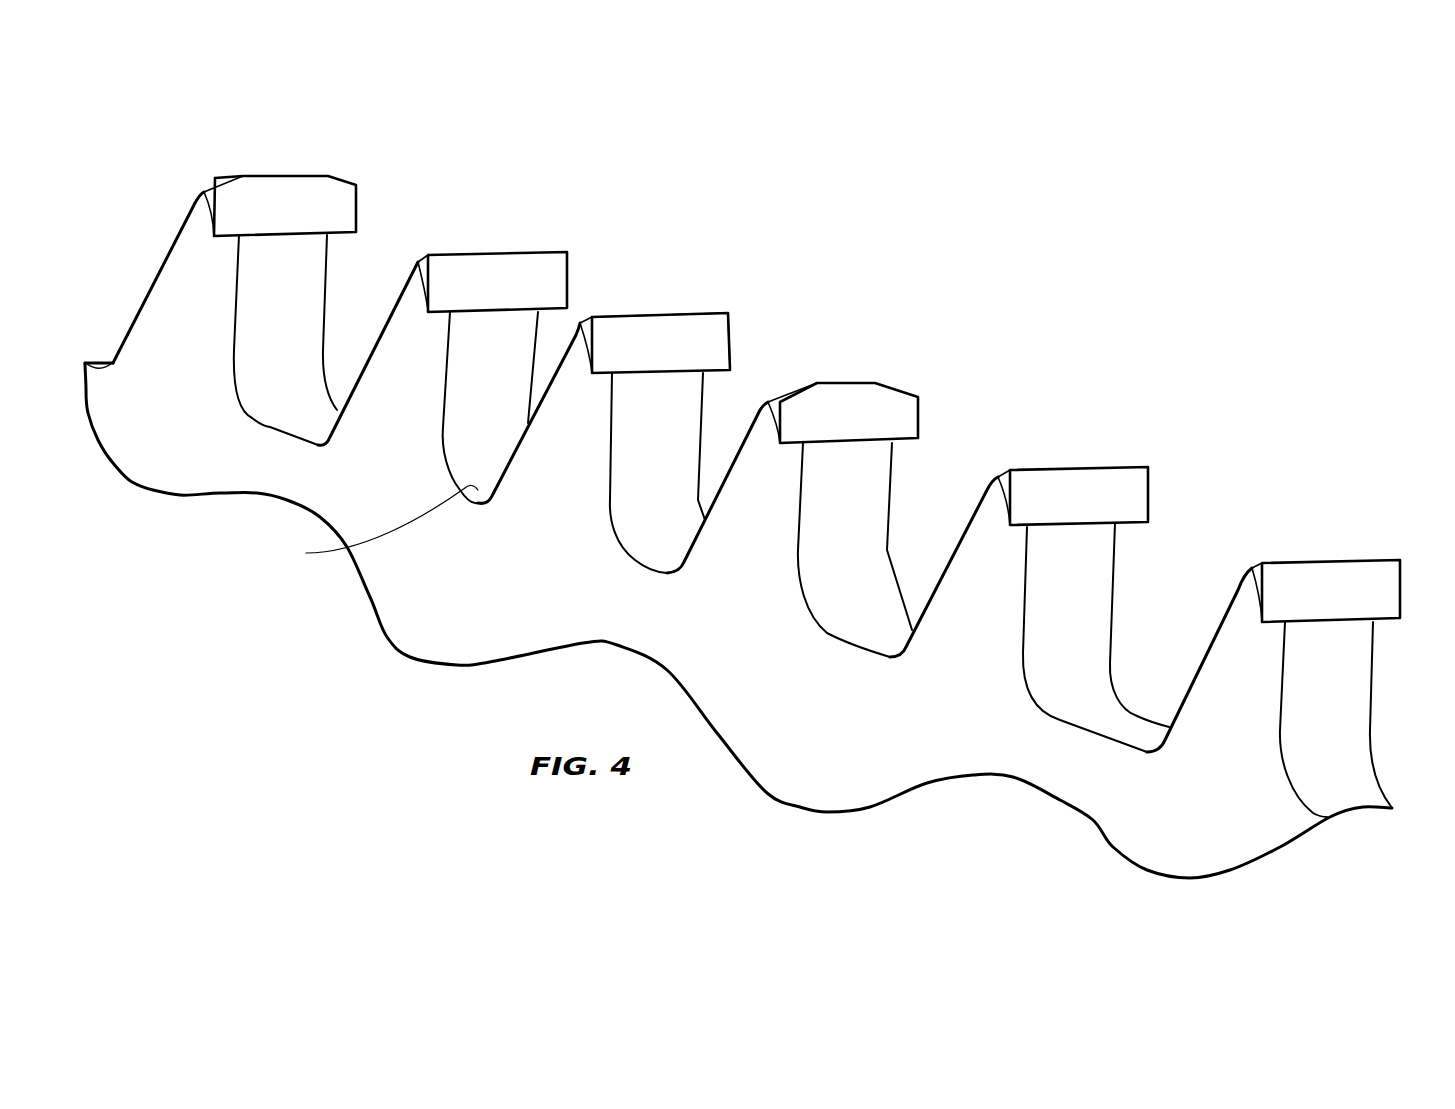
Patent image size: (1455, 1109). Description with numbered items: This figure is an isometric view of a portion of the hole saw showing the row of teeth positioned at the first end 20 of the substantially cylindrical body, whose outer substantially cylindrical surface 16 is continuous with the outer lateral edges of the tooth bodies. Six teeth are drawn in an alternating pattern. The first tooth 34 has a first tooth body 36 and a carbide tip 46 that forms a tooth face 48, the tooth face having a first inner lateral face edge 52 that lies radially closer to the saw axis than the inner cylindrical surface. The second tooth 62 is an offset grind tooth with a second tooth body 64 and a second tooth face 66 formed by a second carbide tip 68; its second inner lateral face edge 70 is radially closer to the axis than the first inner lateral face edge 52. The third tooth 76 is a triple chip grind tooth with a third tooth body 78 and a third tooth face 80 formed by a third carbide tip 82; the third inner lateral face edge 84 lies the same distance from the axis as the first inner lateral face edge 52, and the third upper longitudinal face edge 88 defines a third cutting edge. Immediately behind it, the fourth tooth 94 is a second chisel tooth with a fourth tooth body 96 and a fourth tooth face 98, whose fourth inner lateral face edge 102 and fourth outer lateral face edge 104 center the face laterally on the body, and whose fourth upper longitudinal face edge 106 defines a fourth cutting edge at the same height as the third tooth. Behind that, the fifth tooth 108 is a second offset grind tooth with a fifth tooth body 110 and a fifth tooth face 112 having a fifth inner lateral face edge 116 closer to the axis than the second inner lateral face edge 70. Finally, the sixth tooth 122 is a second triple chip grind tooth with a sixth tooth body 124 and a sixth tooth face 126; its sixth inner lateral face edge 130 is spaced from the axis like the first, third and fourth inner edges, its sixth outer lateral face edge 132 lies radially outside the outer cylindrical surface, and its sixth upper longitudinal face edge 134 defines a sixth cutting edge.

The outer substantially cylindrical surface 16 is at (422, 595).
The first end 20 is at (380, 527).
The first tooth 34 is at (1310, 637).
The first tooth body 36 is at (1246, 705).
The carbide tip 46 is at (1250, 576).
The tooth face 48 is at (1344, 604).
The first inner lateral face edge 52 is at (1402, 578).
The second tooth 62 is at (1078, 561).
The second tooth body 64 is at (989, 609).
The second tooth face 66 is at (1085, 507).
The second carbide tip 68 is at (999, 478).
The second inner lateral face edge 70 is at (1150, 490).
The third tooth 76 is at (872, 455).
The third tooth body 78 is at (764, 529).
The third tooth face 80 is at (865, 425).
The third carbide tip 82 is at (770, 400).
The third inner lateral face edge 84 is at (920, 413).
The third upper longitudinal face edge 88 is at (860, 382).
The fourth tooth 94 is at (692, 371).
The fourth tooth body 96 is at (578, 457).
The fourth tooth face 98 is at (674, 357).
The fourth inner lateral face edge 102 is at (733, 345).
The fourth outer lateral face edge 104 is at (583, 322).
The fourth upper longitudinal face edge 106 is at (672, 316).
The fifth tooth 108 is at (508, 326).
The fifth tooth body 110 is at (414, 412).
The fifth tooth face 112 is at (516, 295).
The fifth inner lateral face edge 116 is at (582, 256).
The sixth tooth 122 is at (271, 254).
The sixth tooth body 124 is at (206, 340).
The sixth tooth face 126 is at (306, 219).
The sixth inner lateral face edge 130 is at (358, 205).
The sixth outer lateral face edge 132 is at (203, 192).
The sixth upper longitudinal face edge 134 is at (293, 177).